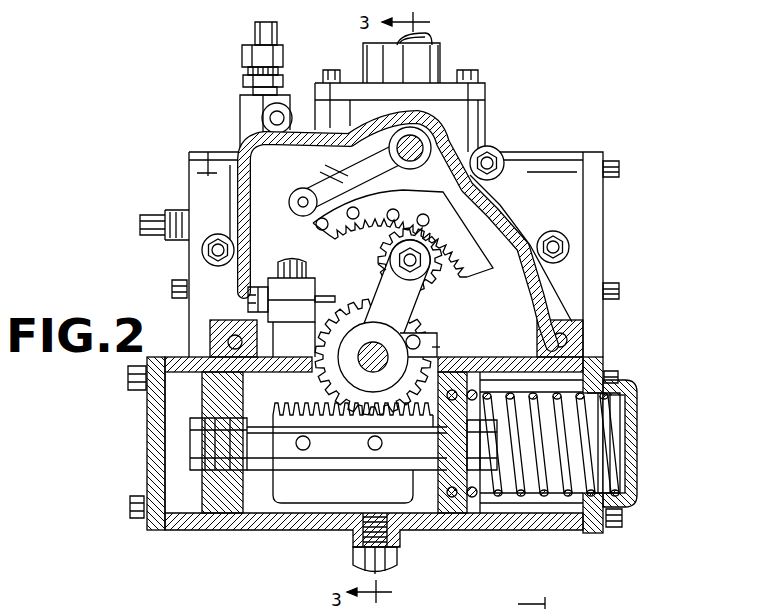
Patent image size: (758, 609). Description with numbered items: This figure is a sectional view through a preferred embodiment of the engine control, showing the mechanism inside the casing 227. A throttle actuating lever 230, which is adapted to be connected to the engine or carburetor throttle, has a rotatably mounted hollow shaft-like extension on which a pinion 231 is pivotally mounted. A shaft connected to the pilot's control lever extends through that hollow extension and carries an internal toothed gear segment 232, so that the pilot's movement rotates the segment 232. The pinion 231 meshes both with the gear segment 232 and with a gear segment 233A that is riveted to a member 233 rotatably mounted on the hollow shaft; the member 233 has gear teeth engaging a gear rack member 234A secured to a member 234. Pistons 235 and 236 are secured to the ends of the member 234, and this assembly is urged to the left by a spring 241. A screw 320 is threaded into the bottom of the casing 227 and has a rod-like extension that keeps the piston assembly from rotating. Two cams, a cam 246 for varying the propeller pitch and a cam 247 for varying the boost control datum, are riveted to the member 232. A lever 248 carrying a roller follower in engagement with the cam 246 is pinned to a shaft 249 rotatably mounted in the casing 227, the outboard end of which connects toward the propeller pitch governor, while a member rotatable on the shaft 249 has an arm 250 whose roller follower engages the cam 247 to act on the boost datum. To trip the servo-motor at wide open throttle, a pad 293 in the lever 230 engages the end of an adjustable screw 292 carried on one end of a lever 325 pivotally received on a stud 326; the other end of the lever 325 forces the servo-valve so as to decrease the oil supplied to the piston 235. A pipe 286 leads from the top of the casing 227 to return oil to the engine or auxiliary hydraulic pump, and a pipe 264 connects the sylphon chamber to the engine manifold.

The casing 227 is at (563, 532).
The lever 230 is at (455, 322).
The pinion 231 is at (448, 226).
The internal toothed gear segment 232 is at (465, 268).
The member 233 is at (315, 348).
The gear segment 233A is at (440, 347).
The member 234 is at (358, 458).
The gear rack member 234A is at (320, 413).
The piston 235 is at (237, 497).
The piston 236 is at (452, 513).
The spring 241 is at (618, 435).
The cam 246 is at (437, 207).
The cam 247 is at (440, 315).
The lever 248 is at (327, 173).
The shaft 249 is at (413, 146).
The arm 250 is at (494, 155).
The pipe 264 is at (281, 32).
The pipe 286 is at (432, 45).
The adjustable screw 292 is at (291, 271).
The pad 293 is at (378, 263).
The screw 320 is at (362, 560).
The lever 325 is at (386, 266).
The stud 326 is at (312, 258).